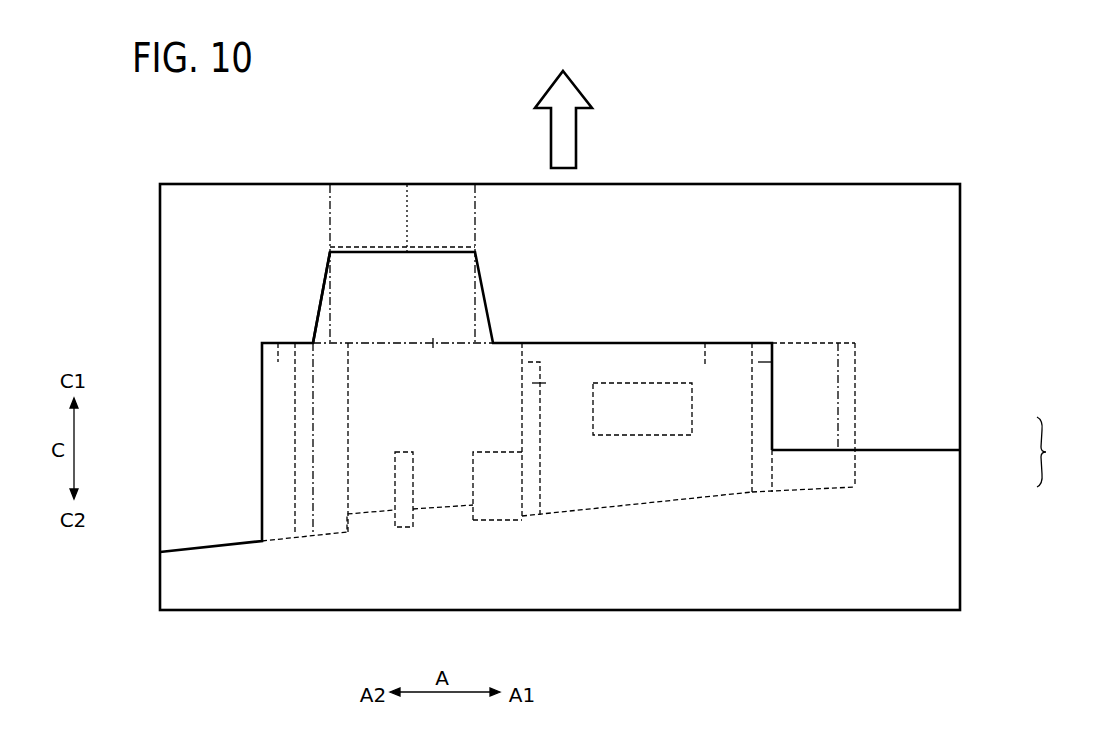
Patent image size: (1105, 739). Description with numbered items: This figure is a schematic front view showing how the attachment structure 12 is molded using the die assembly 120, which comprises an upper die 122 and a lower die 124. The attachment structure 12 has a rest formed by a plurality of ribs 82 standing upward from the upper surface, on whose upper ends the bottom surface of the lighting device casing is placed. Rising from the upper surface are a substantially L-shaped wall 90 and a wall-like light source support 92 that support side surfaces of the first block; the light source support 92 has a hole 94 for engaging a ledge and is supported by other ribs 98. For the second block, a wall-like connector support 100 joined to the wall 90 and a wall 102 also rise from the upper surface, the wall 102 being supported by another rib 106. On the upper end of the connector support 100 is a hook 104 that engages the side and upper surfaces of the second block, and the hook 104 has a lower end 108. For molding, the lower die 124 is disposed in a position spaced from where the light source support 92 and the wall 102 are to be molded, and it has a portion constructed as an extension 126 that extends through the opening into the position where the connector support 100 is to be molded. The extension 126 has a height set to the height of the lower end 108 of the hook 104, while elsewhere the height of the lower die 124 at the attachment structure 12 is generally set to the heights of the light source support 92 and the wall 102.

The attachment structure 12 is at (836, 333).
The ribs 82 is at (413, 470).
The wall 90 is at (858, 398).
The light source support 92 is at (703, 343).
The hole 94 is at (638, 383).
The ribs 98 is at (553, 362).
The connector support 100 is at (433, 340).
The wall 102 is at (278, 345).
The hook 104 is at (328, 221).
The rib 106 is at (297, 422).
The lower end 108 is at (397, 263).
The die assembly 120 is at (1062, 452).
The upper die 122 is at (945, 433).
The lower die 124 is at (945, 471).
The extension 126 is at (322, 296).